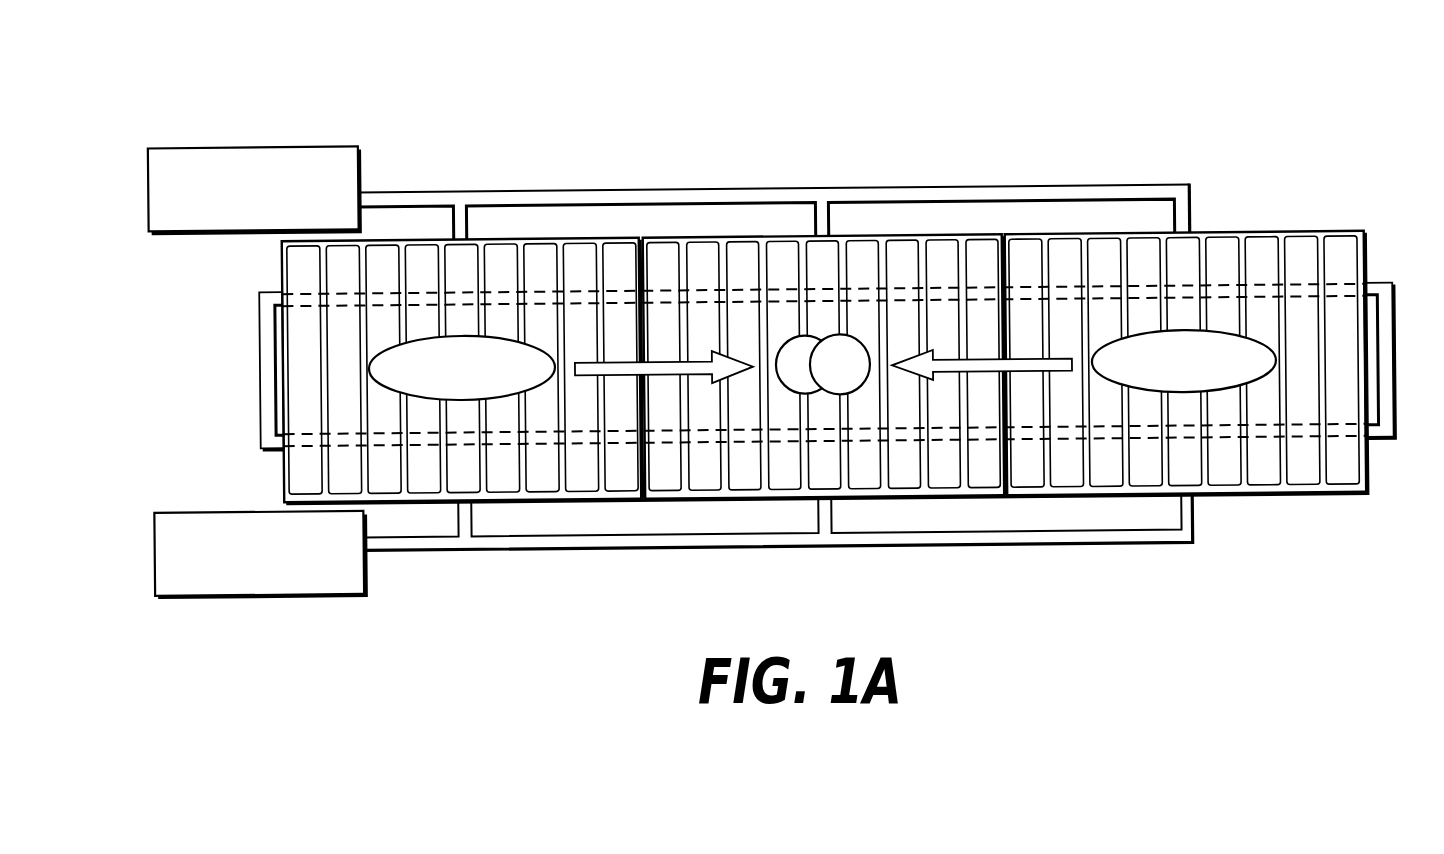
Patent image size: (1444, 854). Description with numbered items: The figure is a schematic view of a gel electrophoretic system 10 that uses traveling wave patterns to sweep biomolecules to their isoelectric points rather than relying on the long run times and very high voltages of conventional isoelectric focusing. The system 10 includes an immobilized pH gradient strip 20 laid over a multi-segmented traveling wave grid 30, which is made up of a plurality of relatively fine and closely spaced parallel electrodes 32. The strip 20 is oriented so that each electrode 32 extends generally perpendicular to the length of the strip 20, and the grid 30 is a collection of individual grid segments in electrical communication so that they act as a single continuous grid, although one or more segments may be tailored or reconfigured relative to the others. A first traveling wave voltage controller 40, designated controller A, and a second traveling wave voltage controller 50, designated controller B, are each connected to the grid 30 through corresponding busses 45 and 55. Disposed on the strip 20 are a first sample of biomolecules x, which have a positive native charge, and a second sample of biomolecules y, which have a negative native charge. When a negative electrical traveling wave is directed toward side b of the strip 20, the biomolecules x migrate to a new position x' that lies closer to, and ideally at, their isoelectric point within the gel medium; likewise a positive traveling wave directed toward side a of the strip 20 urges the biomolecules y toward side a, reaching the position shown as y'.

The gel electrophoretic system 10 is at (1108, 92).
The immobilized pH gradient (IPG) strip 20 is at (300, 326).
The multi-segmented traveling wave grid 30 is at (1280, 498).
The electrodes 32 is at (702, 490).
The first traveling wave voltage controller 40 is at (350, 140).
The bus 45 is at (547, 188).
The second traveling wave voltage controller 50 is at (352, 592).
The bus 55 is at (528, 548).
The first sample of biomolecules x is at (461, 260).
The second sample of biomolecules y is at (1182, 249).
The new position of biomolecules x x' is at (801, 251).
The droplet y' is at (847, 248).
The side a of the strip a is at (262, 401).
The side b of the strip b is at (1395, 366).